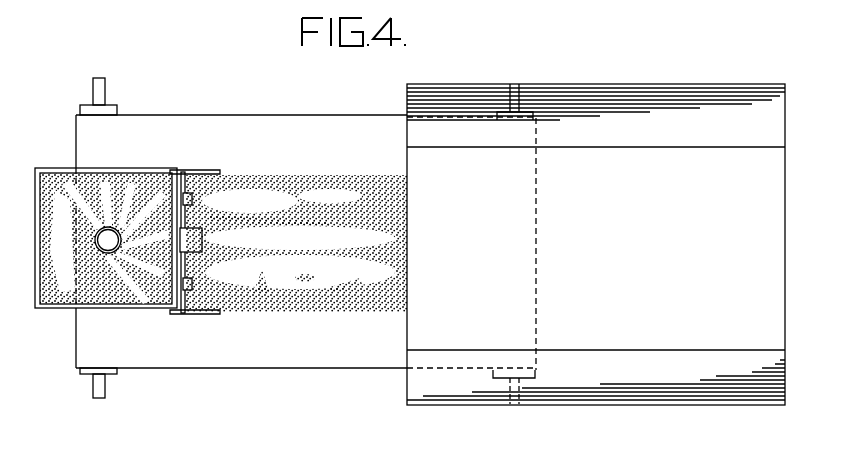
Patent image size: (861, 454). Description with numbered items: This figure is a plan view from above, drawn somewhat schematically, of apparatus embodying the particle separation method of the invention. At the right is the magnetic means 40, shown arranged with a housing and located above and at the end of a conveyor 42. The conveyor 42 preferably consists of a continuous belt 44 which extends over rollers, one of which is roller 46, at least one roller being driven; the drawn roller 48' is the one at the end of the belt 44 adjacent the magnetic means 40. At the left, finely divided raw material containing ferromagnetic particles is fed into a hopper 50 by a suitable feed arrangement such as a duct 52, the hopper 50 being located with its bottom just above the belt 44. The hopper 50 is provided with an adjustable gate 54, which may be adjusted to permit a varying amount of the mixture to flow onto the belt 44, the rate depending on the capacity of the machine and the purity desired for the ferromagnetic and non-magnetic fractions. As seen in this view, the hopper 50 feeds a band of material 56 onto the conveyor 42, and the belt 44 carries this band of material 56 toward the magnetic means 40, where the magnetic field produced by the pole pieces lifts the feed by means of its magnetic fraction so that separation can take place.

The magnetic means 40 is at (648, 215).
The conveyor 42 is at (318, 99).
The continuous belt 44 is at (265, 367).
The roller 46 is at (88, 373).
The drum pivot bearing 48' is at (471, 259).
The hopper 50 is at (51, 168).
The duct 52 is at (113, 227).
The adjustable gate 54 is at (190, 180).
The band of material 56 is at (325, 178).